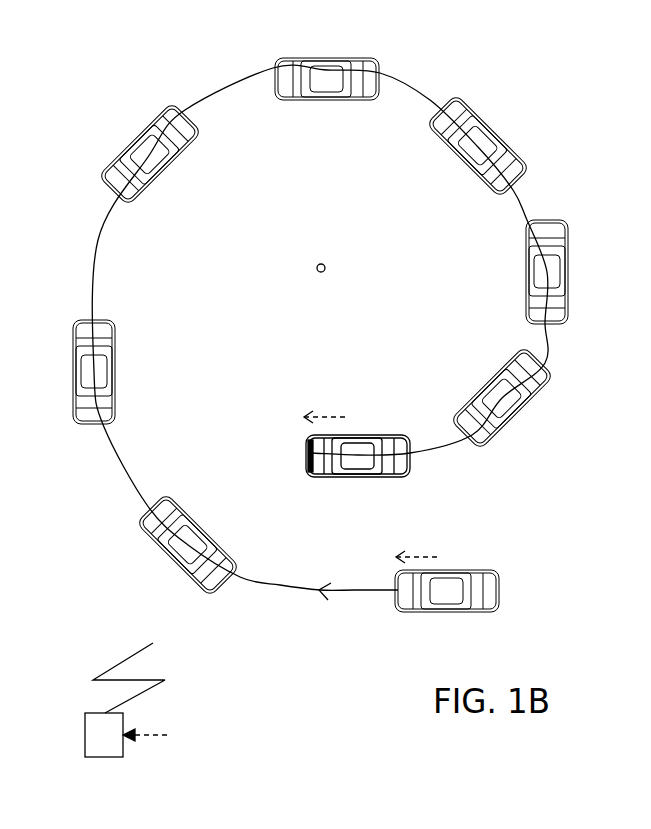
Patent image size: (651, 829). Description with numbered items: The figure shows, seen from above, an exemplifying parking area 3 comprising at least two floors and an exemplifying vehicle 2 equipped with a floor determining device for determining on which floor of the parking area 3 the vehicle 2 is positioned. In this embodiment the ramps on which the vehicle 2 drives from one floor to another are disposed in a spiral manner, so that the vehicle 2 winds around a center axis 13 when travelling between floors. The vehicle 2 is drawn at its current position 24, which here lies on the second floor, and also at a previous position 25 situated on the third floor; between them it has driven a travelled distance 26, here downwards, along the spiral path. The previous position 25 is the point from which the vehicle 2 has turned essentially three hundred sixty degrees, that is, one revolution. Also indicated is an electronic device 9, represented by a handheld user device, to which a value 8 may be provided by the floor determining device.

The vehicle 2 is at (438, 492).
The parking area 3 is at (588, 125).
The value 8 is at (157, 730).
The electronic device 9 is at (85, 737).
The center axis 13 is at (326, 262).
The current position 24 is at (360, 425).
The previous position 25 is at (453, 558).
The travelled distance 26 is at (430, 93).